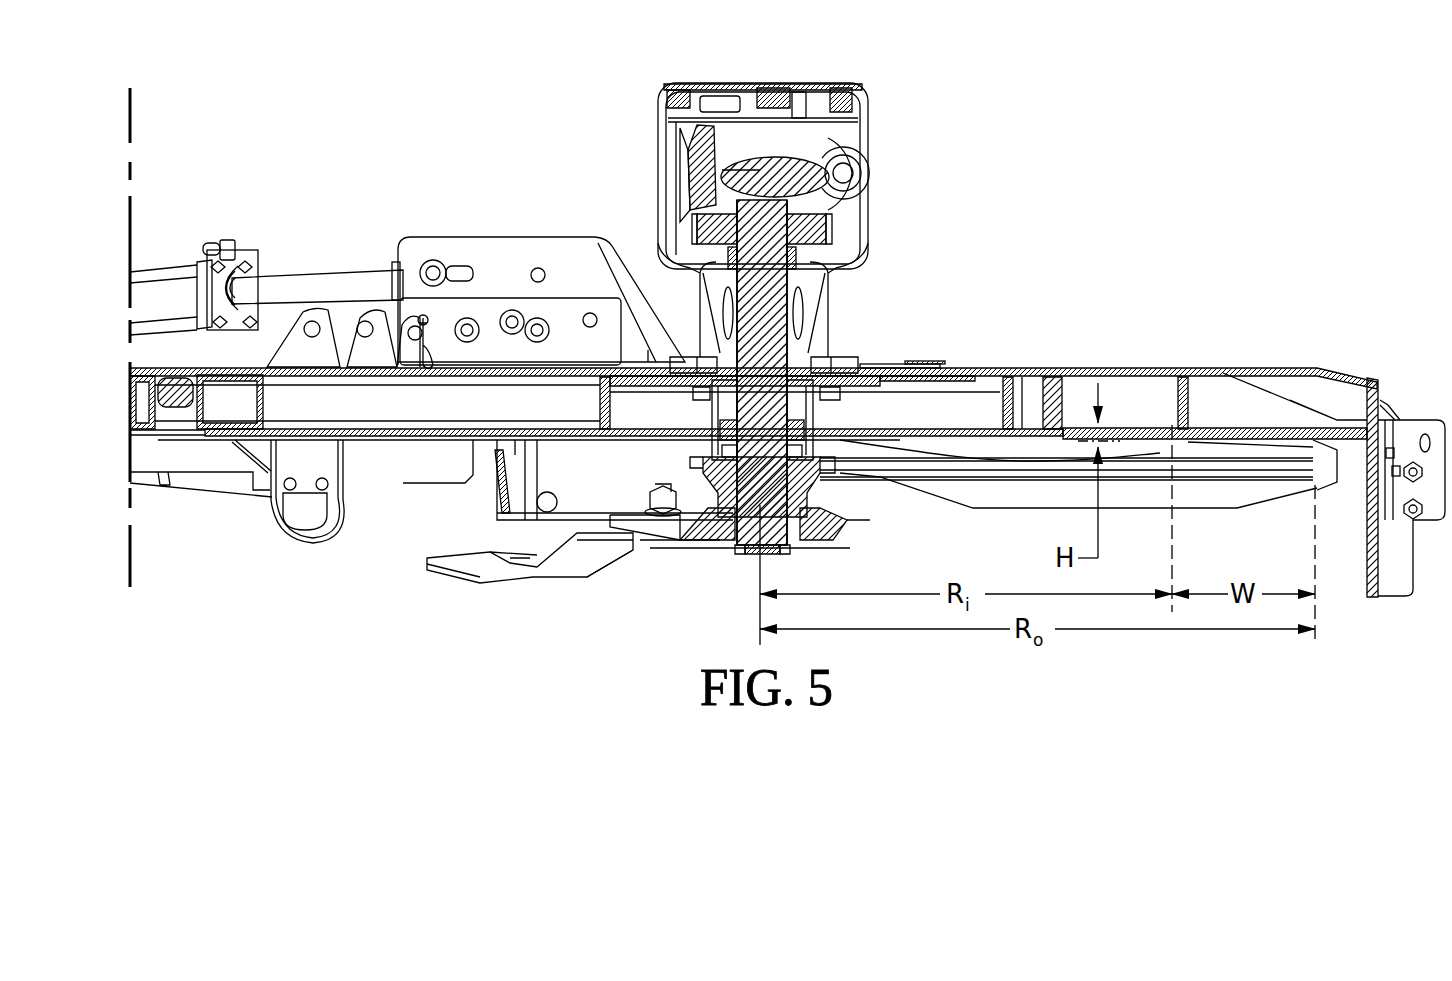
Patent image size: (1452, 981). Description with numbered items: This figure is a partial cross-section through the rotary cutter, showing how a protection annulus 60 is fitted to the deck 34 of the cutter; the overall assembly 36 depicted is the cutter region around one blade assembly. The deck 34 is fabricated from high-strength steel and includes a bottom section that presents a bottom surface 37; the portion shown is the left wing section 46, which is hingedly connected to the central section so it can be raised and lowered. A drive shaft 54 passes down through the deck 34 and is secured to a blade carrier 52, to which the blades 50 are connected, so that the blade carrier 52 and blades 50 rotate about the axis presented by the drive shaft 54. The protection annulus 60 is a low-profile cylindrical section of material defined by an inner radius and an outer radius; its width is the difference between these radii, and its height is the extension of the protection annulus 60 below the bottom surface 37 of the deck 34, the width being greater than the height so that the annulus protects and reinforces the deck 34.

The gearbox housing assembly 36 is at (1063, 184).
The drive shaft 54 is at (762, 342).
The deck 34 is at (1010, 368).
The left wing section 46 is at (1117, 368).
The bottom surface 37 is at (430, 445).
The protection annulus 60 is at (270, 455).
The blade 50 is at (455, 568).
The blade carrier 52 is at (655, 527).